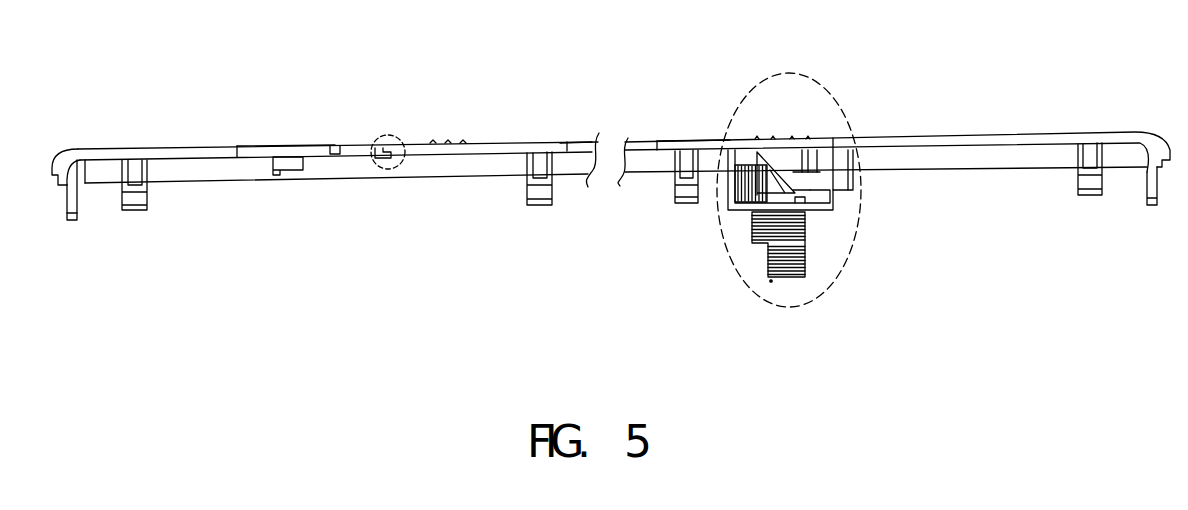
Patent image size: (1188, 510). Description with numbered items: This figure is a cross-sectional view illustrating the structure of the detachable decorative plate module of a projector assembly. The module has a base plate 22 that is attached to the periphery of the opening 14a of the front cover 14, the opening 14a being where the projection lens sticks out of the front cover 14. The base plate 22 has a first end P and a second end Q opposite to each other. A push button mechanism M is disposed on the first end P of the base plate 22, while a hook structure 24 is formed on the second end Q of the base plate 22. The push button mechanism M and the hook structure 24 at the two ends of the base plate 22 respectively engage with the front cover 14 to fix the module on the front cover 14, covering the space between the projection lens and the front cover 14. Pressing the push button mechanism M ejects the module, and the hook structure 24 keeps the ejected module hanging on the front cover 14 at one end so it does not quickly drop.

The front cover 14 is at (937, 158).
The opening 14a is at (575, 148).
The base plate 22 is at (508, 145).
The hook structure 24 is at (380, 138).
The push button mechanism M is at (825, 160).
The first end P is at (790, 195).
The second end Q is at (396, 141).